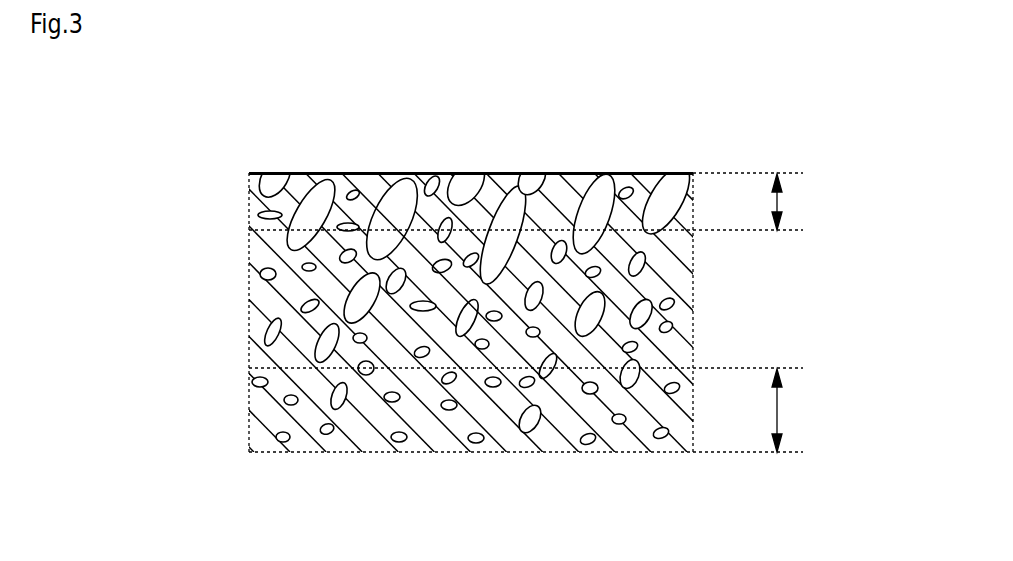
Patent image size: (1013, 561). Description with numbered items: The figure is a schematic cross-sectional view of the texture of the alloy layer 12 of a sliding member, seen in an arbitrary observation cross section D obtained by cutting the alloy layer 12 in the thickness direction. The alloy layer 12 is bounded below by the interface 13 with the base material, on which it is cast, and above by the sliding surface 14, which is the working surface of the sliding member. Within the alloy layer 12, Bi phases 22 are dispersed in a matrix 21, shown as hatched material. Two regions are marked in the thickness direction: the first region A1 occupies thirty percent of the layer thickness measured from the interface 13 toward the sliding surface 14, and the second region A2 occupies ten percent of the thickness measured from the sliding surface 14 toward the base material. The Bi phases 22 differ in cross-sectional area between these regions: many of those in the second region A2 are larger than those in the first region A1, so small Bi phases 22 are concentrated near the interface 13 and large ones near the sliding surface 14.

The alloy layer 12 is at (229, 253).
The interface 13 is at (273, 452).
The sliding surface 14 is at (348, 173).
The matrix 21 is at (267, 333).
The Bi phases 22 is at (607, 433).
The first region A1 is at (780, 410).
The second region A2 is at (780, 200).
The observation cross section D is at (470, 116).